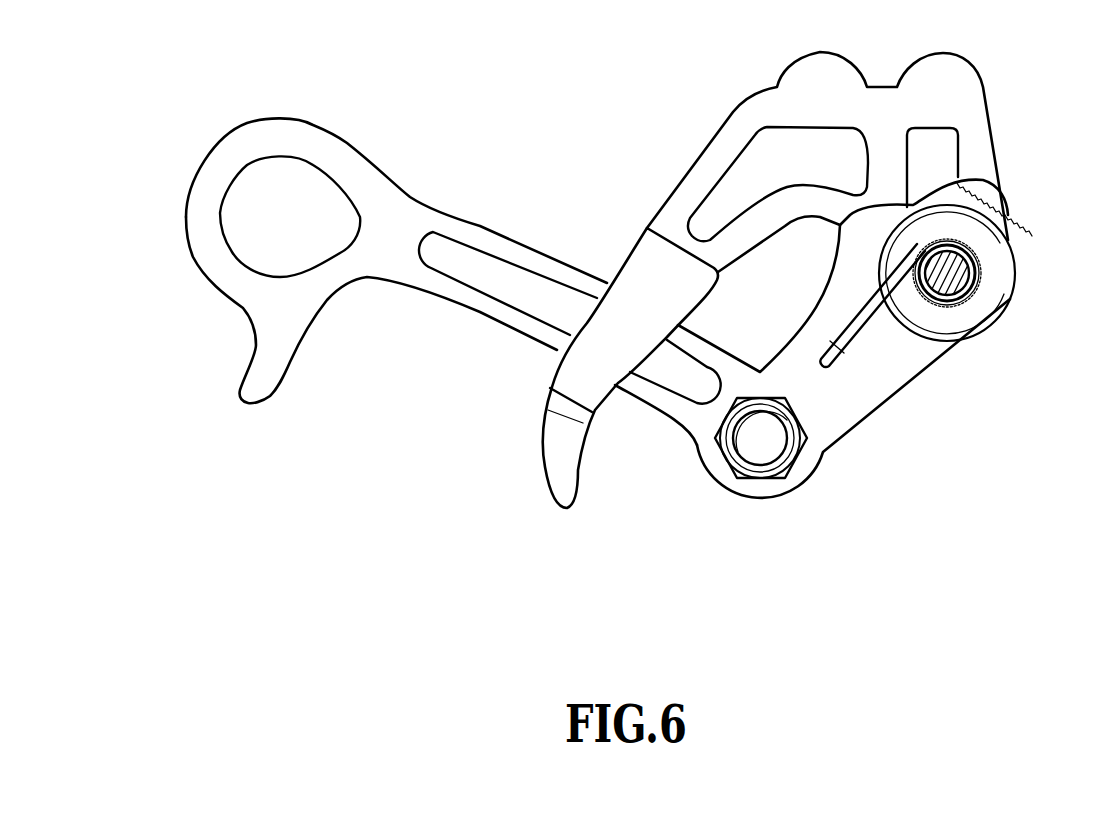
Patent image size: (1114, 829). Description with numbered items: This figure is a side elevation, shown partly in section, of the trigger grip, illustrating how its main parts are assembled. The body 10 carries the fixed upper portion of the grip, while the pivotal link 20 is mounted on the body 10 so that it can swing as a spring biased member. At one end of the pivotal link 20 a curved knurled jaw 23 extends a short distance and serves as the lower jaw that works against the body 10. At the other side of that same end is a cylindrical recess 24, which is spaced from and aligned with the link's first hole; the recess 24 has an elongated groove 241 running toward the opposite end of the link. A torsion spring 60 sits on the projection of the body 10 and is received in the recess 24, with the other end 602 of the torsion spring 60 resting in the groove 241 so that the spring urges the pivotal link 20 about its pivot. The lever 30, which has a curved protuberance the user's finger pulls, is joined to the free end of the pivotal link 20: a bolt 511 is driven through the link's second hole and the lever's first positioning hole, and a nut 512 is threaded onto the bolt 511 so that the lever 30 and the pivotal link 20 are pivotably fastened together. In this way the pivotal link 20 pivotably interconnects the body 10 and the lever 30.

The body 10 is at (980, 87).
The pivotal link 20 is at (802, 348).
The curved knurled jaw 23 is at (967, 197).
The cylindrical recess 24 is at (980, 262).
The lever 30 is at (535, 252).
The torsion spring 60 is at (973, 302).
The elongated groove 241 is at (833, 358).
The other end of torsion spring 602 is at (857, 330).
The bolt 511 is at (783, 445).
The nut 512 is at (780, 475).